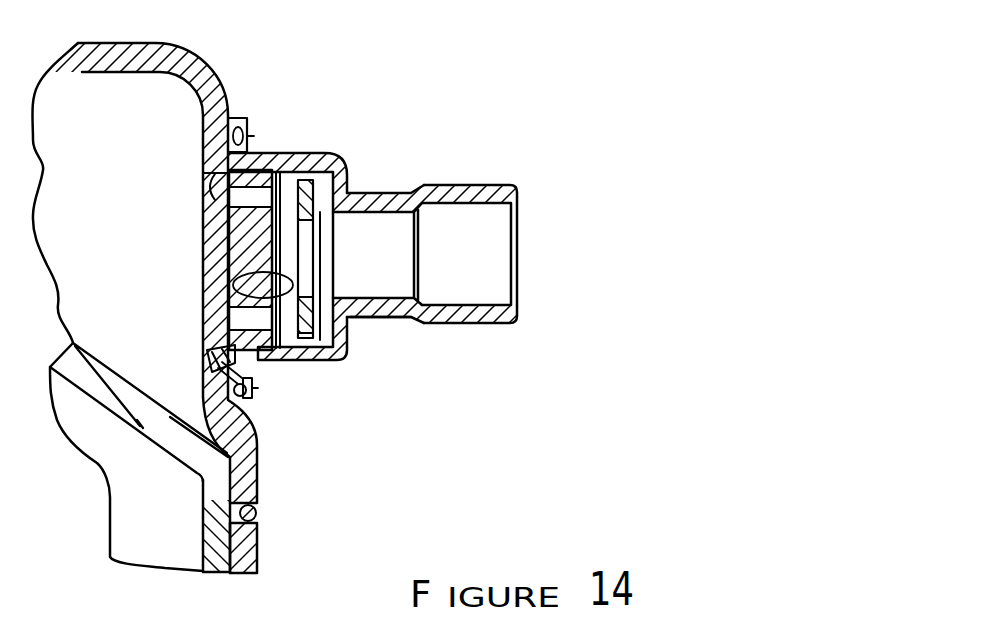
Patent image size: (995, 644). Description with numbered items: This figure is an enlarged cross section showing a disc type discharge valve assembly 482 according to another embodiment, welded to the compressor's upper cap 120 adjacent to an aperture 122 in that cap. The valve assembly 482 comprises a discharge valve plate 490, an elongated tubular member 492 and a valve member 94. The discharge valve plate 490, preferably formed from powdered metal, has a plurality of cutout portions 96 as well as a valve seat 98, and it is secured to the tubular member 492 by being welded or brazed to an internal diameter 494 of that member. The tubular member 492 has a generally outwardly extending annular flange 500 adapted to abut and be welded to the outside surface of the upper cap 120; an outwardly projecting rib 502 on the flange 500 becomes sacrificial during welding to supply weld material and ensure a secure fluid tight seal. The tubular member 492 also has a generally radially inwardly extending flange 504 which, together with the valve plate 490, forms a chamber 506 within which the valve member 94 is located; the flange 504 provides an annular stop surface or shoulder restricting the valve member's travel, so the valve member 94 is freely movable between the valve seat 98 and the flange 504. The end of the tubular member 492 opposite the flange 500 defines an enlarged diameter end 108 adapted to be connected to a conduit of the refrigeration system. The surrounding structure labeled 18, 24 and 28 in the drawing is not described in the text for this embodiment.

The base plate 18 is at (258, 565).
The strip 24 is at (140, 428).
The housing body 28 is at (112, 124).
The valve member 94 is at (349, 195).
The cutout portions 96 is at (228, 213).
The valve seat 98 is at (236, 290).
The enlarged diameter end 108 is at (487, 205).
The upper cap 120 is at (170, 58).
The aperture 122 is at (203, 202).
The discharge valve assembly 482 is at (513, 10).
The discharge valve plate 490 is at (233, 260).
The elongated tubular member 492 is at (385, 318).
The internal diameter 494 is at (207, 354).
The annular flange 500 is at (254, 394).
The rib 502 is at (228, 133).
The radially inwardly extending flange 504 is at (348, 185).
The chamber 506 is at (283, 180).